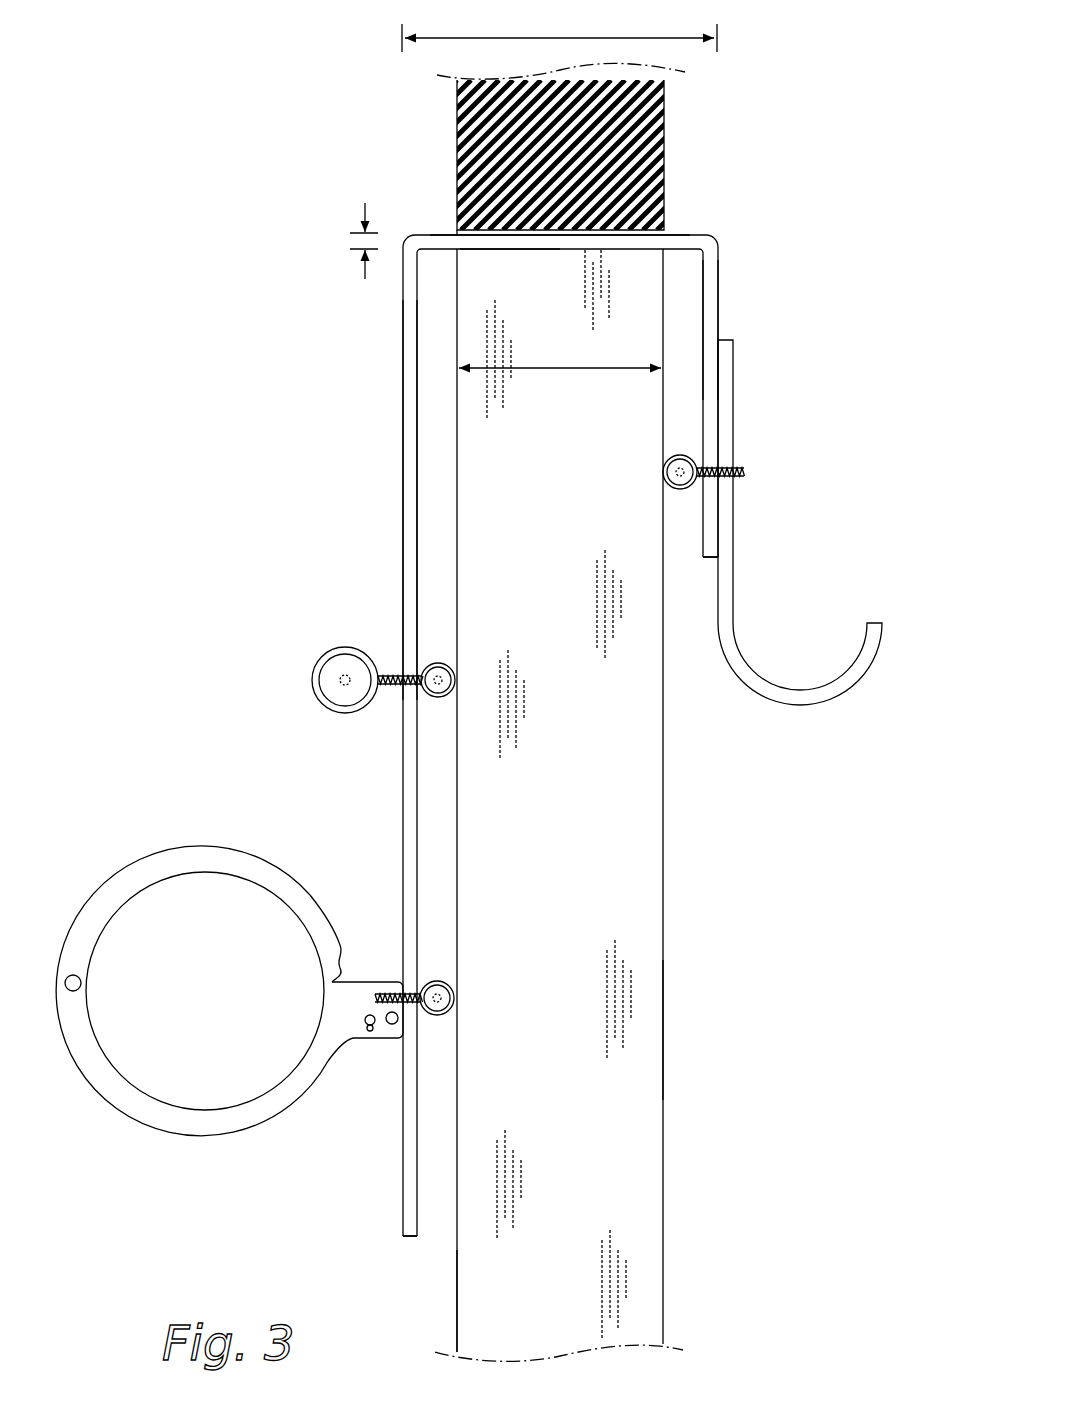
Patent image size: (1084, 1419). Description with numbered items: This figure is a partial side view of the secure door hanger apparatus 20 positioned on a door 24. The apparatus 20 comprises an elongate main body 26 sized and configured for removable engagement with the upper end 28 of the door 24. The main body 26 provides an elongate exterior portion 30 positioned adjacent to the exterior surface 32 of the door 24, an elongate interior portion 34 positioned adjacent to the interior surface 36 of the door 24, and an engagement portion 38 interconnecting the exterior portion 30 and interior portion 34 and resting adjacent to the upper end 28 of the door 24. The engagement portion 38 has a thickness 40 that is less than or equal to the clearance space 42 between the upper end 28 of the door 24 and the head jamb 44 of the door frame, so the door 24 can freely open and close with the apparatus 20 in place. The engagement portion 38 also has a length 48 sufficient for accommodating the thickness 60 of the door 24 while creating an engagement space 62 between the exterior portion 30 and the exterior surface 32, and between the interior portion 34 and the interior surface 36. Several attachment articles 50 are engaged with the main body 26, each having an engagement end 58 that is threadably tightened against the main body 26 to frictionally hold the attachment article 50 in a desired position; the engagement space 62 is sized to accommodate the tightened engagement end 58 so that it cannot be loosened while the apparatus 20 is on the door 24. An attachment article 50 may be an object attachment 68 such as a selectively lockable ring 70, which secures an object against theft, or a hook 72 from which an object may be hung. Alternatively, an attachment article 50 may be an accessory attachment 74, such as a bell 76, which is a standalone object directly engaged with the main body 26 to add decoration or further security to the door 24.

The apparatus 20 is at (811, 130).
The door 24 is at (607, 898).
The main body 26 is at (757, 237).
The upper end 28 is at (492, 252).
The exterior portion 30 is at (403, 480).
The exterior surface 32 is at (457, 1312).
The interior portion 34 is at (718, 316).
The interior surface 36 is at (662, 1030).
The engagement portion 38 is at (678, 235).
The thickness 40 is at (358, 240).
The clearance space 42 is at (450, 232).
The head jamb 44 is at (660, 130).
The length 48 is at (607, 36).
The attachment article 50 is at (502, 760).
The engagement end 58 is at (682, 455).
The thickness 60 is at (540, 370).
The engagement space 62 is at (437, 1228).
The object attachment 68 is at (502, 760).
The selectively lockable ring 70 is at (285, 880).
The hook 72 is at (870, 657).
The accessory attachment 74 is at (338, 728).
The bell 76 is at (310, 681).